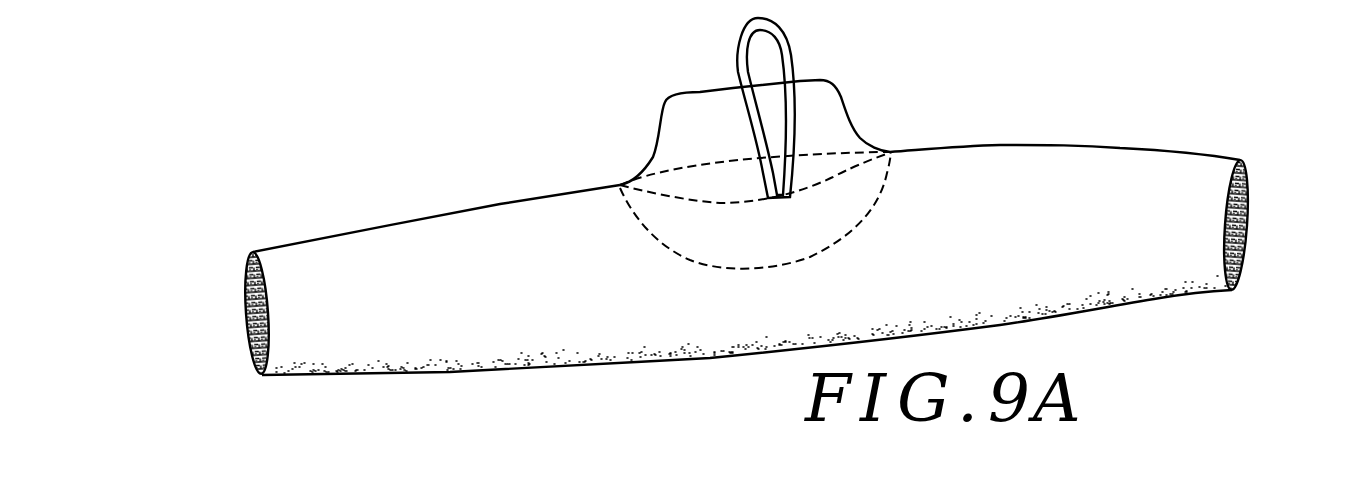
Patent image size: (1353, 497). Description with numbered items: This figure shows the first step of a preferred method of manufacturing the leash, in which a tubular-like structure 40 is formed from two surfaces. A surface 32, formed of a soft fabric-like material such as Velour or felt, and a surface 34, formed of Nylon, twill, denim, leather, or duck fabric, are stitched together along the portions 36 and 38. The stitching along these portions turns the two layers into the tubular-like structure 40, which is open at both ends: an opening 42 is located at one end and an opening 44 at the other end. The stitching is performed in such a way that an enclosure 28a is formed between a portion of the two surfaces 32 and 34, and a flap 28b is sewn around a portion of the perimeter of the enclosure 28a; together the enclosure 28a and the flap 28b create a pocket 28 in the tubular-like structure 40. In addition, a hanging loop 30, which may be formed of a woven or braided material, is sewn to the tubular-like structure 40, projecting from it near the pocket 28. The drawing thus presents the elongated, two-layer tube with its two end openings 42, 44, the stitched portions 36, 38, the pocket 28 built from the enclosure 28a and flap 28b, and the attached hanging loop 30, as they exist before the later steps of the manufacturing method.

The pocket 28 is at (768, 143).
The enclosure 28a is at (789, 196).
The flap 28b is at (773, 93).
The hanging loop 30 is at (797, 72).
The surface 32 is at (492, 325).
The surface 34 is at (218, 312).
The portion 36 is at (479, 207).
The portion 38 is at (438, 373).
The tubular-like structure 40 is at (735, 219).
The opening 42 is at (246, 352).
The opening 44 is at (1252, 227).